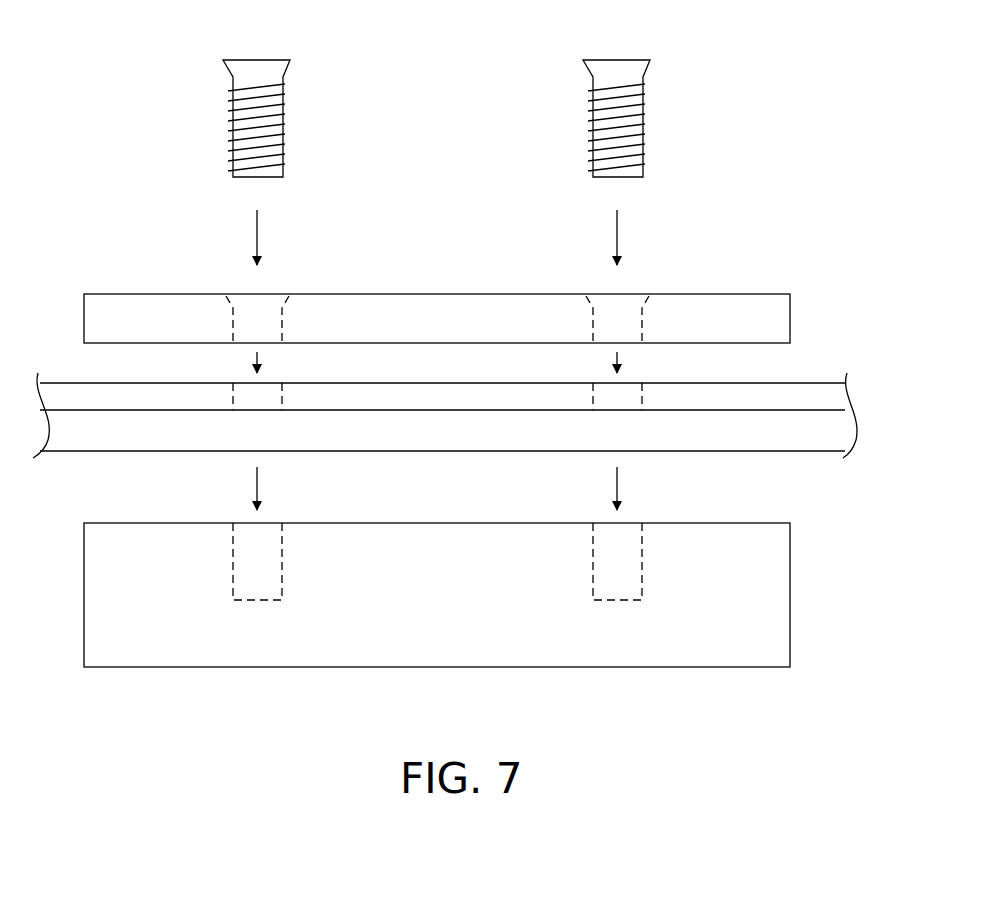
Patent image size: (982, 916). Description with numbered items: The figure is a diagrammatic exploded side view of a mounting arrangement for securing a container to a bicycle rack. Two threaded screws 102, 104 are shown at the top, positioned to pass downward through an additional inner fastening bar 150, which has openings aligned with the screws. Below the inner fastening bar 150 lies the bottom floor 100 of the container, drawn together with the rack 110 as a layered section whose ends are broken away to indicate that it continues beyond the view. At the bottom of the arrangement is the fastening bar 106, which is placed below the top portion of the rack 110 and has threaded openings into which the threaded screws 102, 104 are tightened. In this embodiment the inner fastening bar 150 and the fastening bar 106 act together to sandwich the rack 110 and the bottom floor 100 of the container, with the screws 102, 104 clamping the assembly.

The threaded screw 102 is at (291, 62).
The threaded screw 104 is at (651, 62).
The inner fastening bar 150 is at (757, 303).
The bottom floor 100 is at (822, 390).
The rack 110 is at (823, 442).
The fastening bar 106 is at (783, 595).